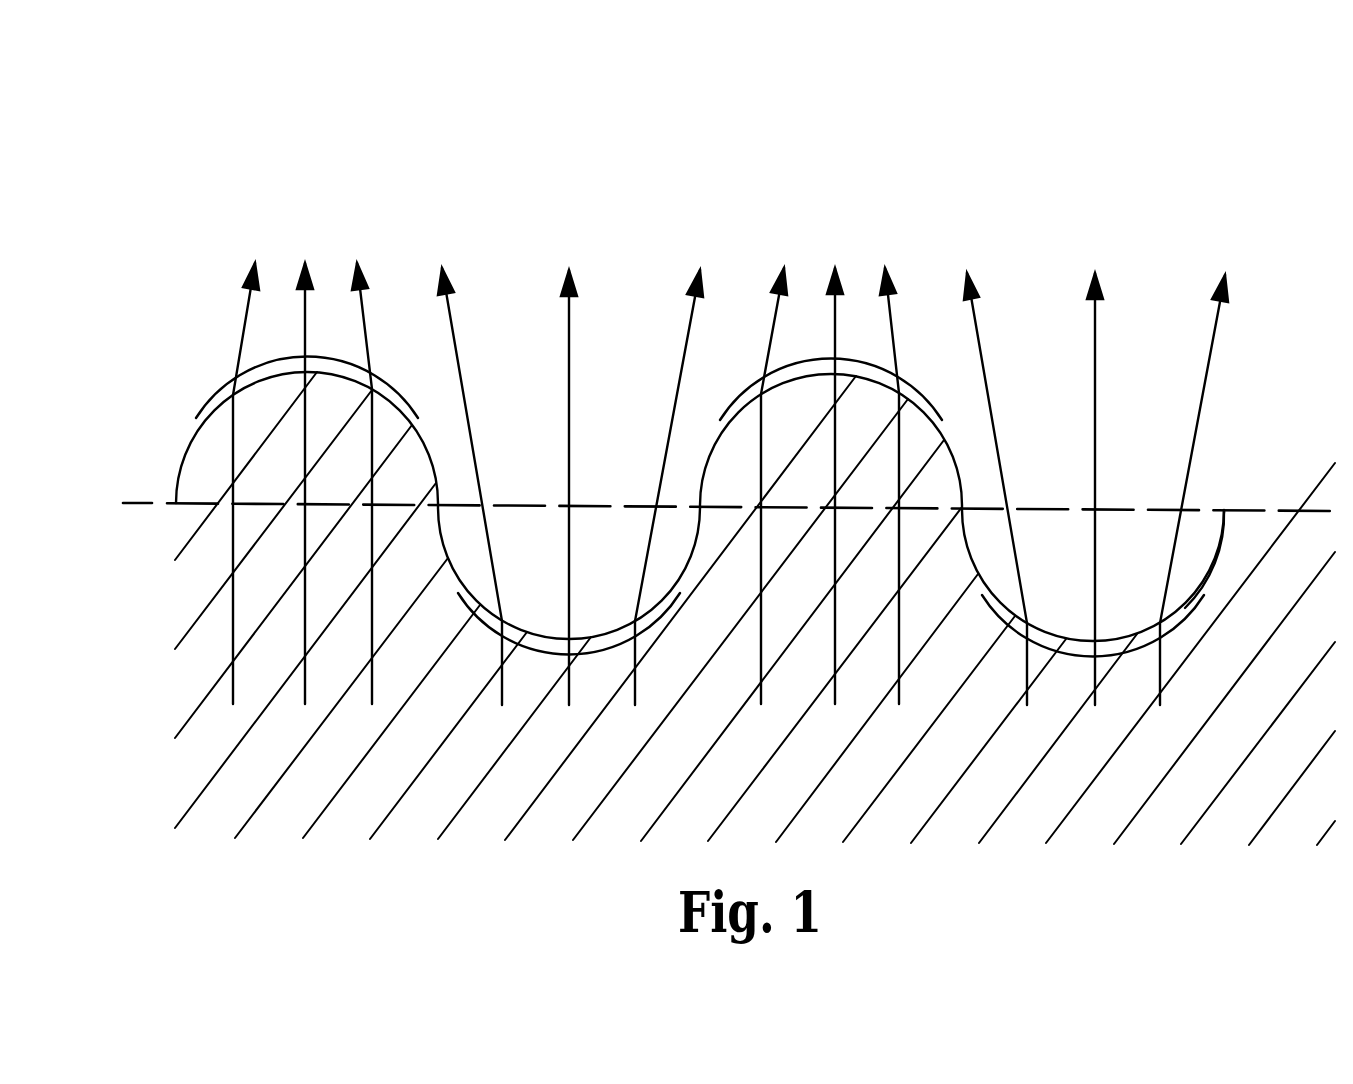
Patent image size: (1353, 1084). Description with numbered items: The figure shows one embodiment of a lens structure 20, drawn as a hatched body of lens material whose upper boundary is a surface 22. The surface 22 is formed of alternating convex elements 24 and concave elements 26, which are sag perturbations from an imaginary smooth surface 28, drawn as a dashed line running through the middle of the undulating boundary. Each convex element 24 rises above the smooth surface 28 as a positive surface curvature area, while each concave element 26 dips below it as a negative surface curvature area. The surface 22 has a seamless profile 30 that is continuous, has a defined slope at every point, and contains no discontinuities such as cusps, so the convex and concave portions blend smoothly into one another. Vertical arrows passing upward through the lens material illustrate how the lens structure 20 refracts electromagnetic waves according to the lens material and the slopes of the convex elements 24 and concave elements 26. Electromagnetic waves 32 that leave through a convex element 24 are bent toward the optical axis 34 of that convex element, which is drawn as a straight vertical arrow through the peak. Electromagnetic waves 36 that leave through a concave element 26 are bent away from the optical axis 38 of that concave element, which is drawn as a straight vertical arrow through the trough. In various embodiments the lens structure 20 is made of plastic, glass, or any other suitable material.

The lens structure 20 is at (900, 127).
The surface 22 is at (180, 462).
The convex elements 24 is at (332, 372).
The concave elements 26 is at (590, 639).
The imaginary smooth surface 28 is at (133, 503).
The seamless profile 30 is at (1213, 567).
The electromagnetic waves 32 is at (247, 329).
The optical axis of the convex element 34 is at (303, 316).
The electromagnetic waves 36 is at (455, 348).
The optical axis of the concave element 38 is at (569, 465).